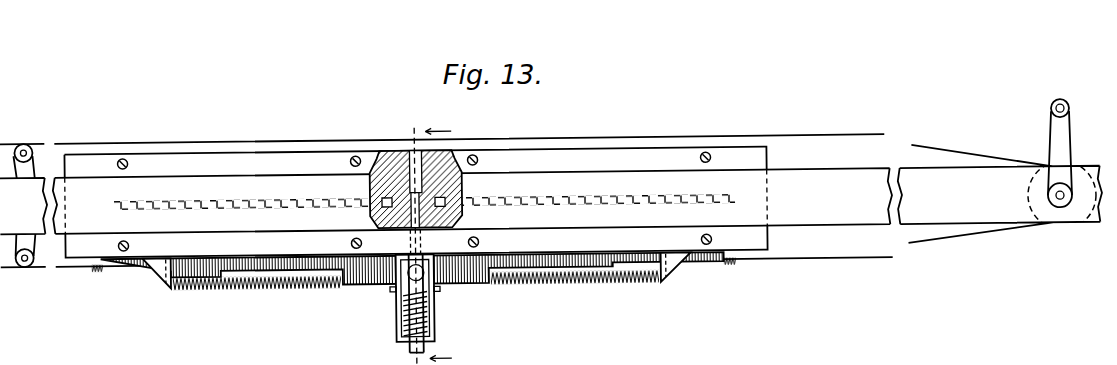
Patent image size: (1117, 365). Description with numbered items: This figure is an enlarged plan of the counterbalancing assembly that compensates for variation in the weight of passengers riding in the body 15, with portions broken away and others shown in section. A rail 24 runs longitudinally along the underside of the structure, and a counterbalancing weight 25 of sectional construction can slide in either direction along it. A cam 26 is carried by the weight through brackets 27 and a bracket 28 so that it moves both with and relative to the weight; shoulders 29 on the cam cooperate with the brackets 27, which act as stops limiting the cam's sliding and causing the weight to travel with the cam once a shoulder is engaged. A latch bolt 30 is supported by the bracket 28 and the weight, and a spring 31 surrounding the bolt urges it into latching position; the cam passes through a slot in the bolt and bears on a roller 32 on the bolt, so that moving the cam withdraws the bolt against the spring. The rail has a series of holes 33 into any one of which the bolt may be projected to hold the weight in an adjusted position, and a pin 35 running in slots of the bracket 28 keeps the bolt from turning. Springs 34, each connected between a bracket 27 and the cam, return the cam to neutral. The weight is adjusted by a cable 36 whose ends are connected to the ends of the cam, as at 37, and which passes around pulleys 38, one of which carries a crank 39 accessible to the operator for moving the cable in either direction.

The body 15 is at (430, 236).
The rail 24 is at (833, 213).
The counterbalancing weight 25 is at (756, 245).
The cam 26 is at (536, 283).
The brackets 27 is at (161, 279).
The bracket 28 is at (430, 318).
The shoulders 29 is at (205, 287).
The latch bolt 30 is at (458, 213).
The spring 31 is at (400, 318).
The roller 32 is at (438, 290).
The holes 33 is at (380, 200).
The springs 34 is at (305, 288).
The pin 35 is at (391, 290).
The cable 36 is at (582, 138).
The cable connections 37 is at (108, 270).
The pulleys 38 is at (24, 139).
The crank 39 is at (1054, 147).